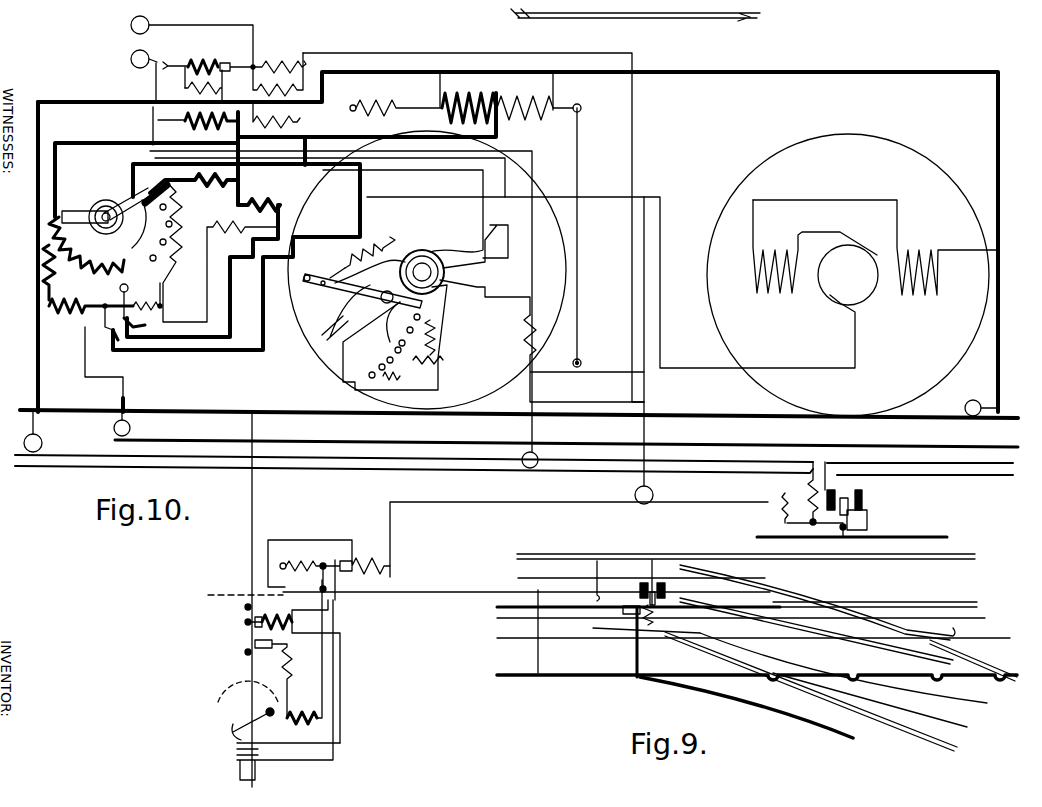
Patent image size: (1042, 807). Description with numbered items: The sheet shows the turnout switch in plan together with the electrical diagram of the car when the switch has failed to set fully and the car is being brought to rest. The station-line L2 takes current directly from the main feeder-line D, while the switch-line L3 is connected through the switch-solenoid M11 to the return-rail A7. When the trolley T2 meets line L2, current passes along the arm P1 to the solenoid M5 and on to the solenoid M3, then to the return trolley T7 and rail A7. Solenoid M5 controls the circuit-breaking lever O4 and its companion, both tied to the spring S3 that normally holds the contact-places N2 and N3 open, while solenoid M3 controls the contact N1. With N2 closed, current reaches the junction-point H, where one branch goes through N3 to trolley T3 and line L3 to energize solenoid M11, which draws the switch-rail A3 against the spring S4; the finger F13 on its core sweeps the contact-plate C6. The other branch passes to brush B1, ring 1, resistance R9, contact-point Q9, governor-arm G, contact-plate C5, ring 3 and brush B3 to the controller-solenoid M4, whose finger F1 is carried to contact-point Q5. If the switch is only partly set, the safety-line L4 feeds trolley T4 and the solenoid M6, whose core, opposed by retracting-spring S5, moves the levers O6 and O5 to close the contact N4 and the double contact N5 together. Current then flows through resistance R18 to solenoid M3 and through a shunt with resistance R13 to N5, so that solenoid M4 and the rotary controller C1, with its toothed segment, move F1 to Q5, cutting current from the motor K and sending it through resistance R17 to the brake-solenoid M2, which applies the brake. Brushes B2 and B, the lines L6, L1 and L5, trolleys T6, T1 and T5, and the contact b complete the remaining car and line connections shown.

In FIG. 10, the trolley T2 is at (176, 40).
In FIG. 10, the trolley T3 is at (128, 58).
In FIG. 10, the conductor P' P1 is at (244, 11).
In FIG. 10, the contact-place N3 is at (172, 51).
In FIG. 10, the circuit-breaking lever O4 is at (143, 104).
In FIG. 10, the solenoid M5 is at (219, 61).
In FIG. 10, the spring S3 is at (244, 77).
In FIG. 10, the circuit-closing lever O5 is at (255, 64).
In FIG. 10, the contact-place N2 is at (263, 99).
In FIG. 10, the solenoid M3 is at (196, 124).
In FIG. 10, the contact N1 is at (276, 124).
In FIG. 10, the resistance R17 is at (146, 180).
In FIG. 10, the resistance R18 is at (278, 205).
In FIG. 10, the contact arm F' F1 is at (182, 188).
In FIG. 10, the contact-point Q5 is at (214, 251).
In FIG. 10, the controller C' C1 is at (107, 218).
In FIG. 10, the controller-solenoid M4 is at (86, 245).
In FIG. 10, the resistance R13 is at (46, 273).
In FIG. 10, the solenoid M6 is at (91, 315).
In FIG. 10, the retracting-spring S5 is at (143, 300).
In FIG. 10, the double contact N5 is at (143, 326).
In FIG. 10, the circuit-closing lever O6 is at (104, 359).
In FIG. 10, the contact N4 is at (120, 343).
In FIG. 10, the terminal T6 is at (41, 432).
In FIG. 10, the trolley T4 is at (133, 424).
In FIG. 10, the safety-line L4 is at (566, 432).
In FIG. 9, the safety-line L4 is at (745, 619).
In FIG. 10, the line wire L6 is at (514, 451).
In FIG. 10, the line wire L' L1 is at (514, 477).
In FIG. 10, the line wire L5 is at (579, 539).
In FIG. 10, the brake-solenoid M2 is at (465, 98).
In FIG. 10, the ring 1 is at (422, 272).
In FIG. 10, the brush B3 is at (450, 252).
In FIG. 10, the brush B2 is at (484, 262).
In FIG. 10, the ring 3 is at (446, 273).
In FIG. 10, the brush B is at (485, 287).
In FIG. 10, the brush B1 is at (480, 318).
In FIG. 10, the governor-arm G is at (375, 292).
In FIG. 10, the contact-plate C5 is at (384, 337).
In FIG. 10, the resistance R9 is at (425, 356).
In FIG. 10, the contact-point Q9 is at (395, 383).
In FIG. 10, the junction-point H is at (584, 358).
In FIG. 10, the motor K is at (852, 275).
In FIG. 10, the return trolley T7 is at (980, 396).
In FIG. 10, the return-rail A7 is at (1007, 408).
In FIG. 9, the return-rail A7 is at (746, 566).
In FIG. 10, the terminal T' T1 is at (535, 468).
In FIG. 10, the terminal T5 is at (653, 492).
In FIG. 10, the contact b is at (336, 575).
In FIG. 9, the switch-line L3 is at (641, 571).
In FIG. 9, the station-line L2 is at (630, 587).
In FIG. 9, the main feeder-line D is at (757, 706).
In FIG. 9, the movable switch-rail A3 is at (776, 600).
In FIG. 9, the switch-solenoid M11 is at (642, 582).
In FIG. 9, the contact F13 is at (624, 606).
In FIG. 9, the spring S4 is at (660, 612).
In FIG. 9, the contact-plate C6 is at (646, 627).